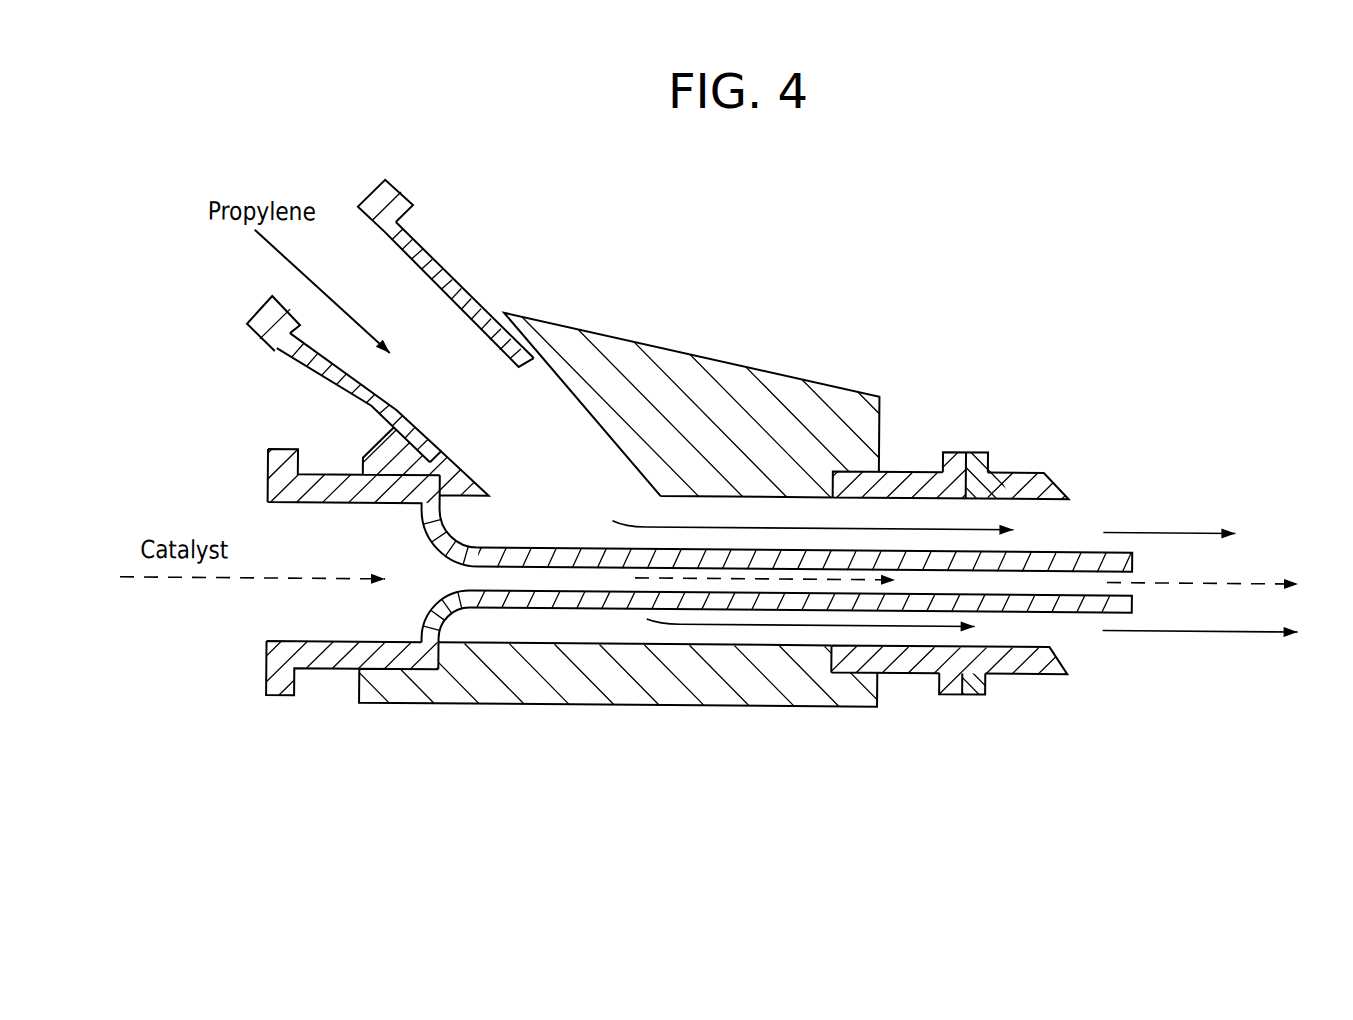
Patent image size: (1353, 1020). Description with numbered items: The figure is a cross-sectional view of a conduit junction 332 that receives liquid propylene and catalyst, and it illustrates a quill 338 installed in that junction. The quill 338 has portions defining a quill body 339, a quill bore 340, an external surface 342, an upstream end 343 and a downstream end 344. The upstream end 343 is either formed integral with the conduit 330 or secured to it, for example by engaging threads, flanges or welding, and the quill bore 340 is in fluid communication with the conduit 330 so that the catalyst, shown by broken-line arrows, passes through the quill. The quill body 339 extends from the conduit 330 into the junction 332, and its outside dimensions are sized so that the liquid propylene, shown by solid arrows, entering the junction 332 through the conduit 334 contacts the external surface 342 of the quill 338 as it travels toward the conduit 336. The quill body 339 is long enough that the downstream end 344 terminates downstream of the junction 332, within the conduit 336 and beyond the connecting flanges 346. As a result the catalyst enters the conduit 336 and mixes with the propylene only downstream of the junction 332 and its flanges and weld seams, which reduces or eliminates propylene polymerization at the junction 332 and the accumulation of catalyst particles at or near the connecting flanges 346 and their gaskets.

The conduit 330 is at (320, 670).
The junction 332 is at (673, 348).
The conduit 334 is at (436, 265).
The conduit 336 is at (992, 467).
The quill 338 is at (1100, 514).
The quill body 339 is at (567, 547).
The quill bore 340 is at (1073, 566).
The external surface 342 is at (1050, 547).
The upstream end 343 is at (420, 703).
The downstream end 344 is at (1132, 557).
The connecting flanges 346 is at (953, 447).